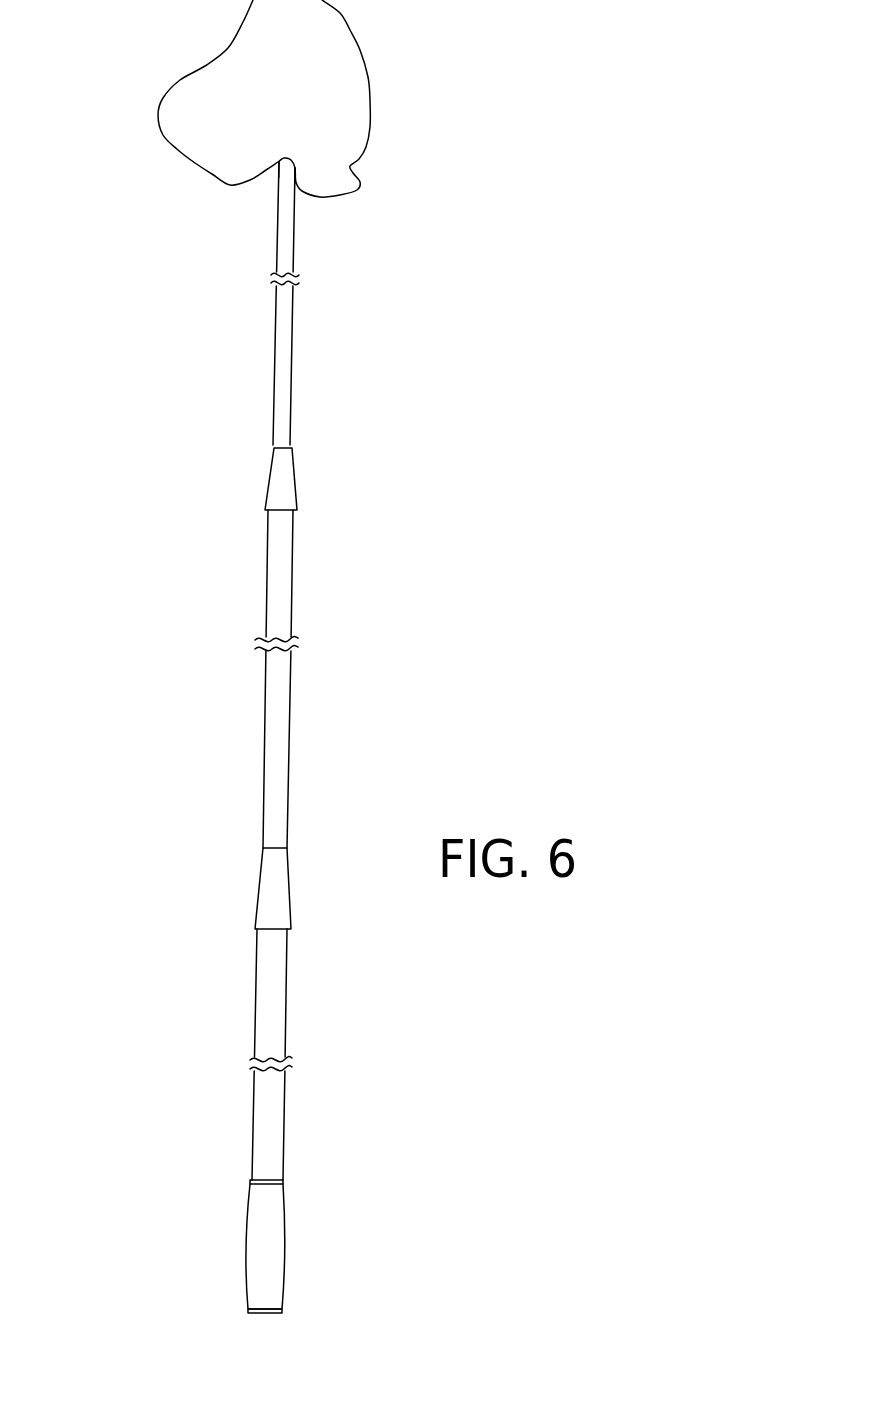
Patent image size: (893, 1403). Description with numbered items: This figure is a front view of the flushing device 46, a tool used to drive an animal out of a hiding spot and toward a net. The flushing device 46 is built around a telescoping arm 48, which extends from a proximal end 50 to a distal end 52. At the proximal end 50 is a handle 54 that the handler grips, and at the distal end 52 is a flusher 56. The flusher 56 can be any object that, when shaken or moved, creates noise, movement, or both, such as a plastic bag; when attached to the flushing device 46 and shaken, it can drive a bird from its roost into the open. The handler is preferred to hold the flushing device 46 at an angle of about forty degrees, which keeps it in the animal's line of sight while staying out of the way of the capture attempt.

The flusher 56 is at (343, 116).
The distal end 52 is at (287, 173).
The flushing device 46 is at (275, 430).
The telescoping arm 48 is at (277, 593).
The proximal end 50 is at (267, 1169).
The handle 54 is at (255, 1258).